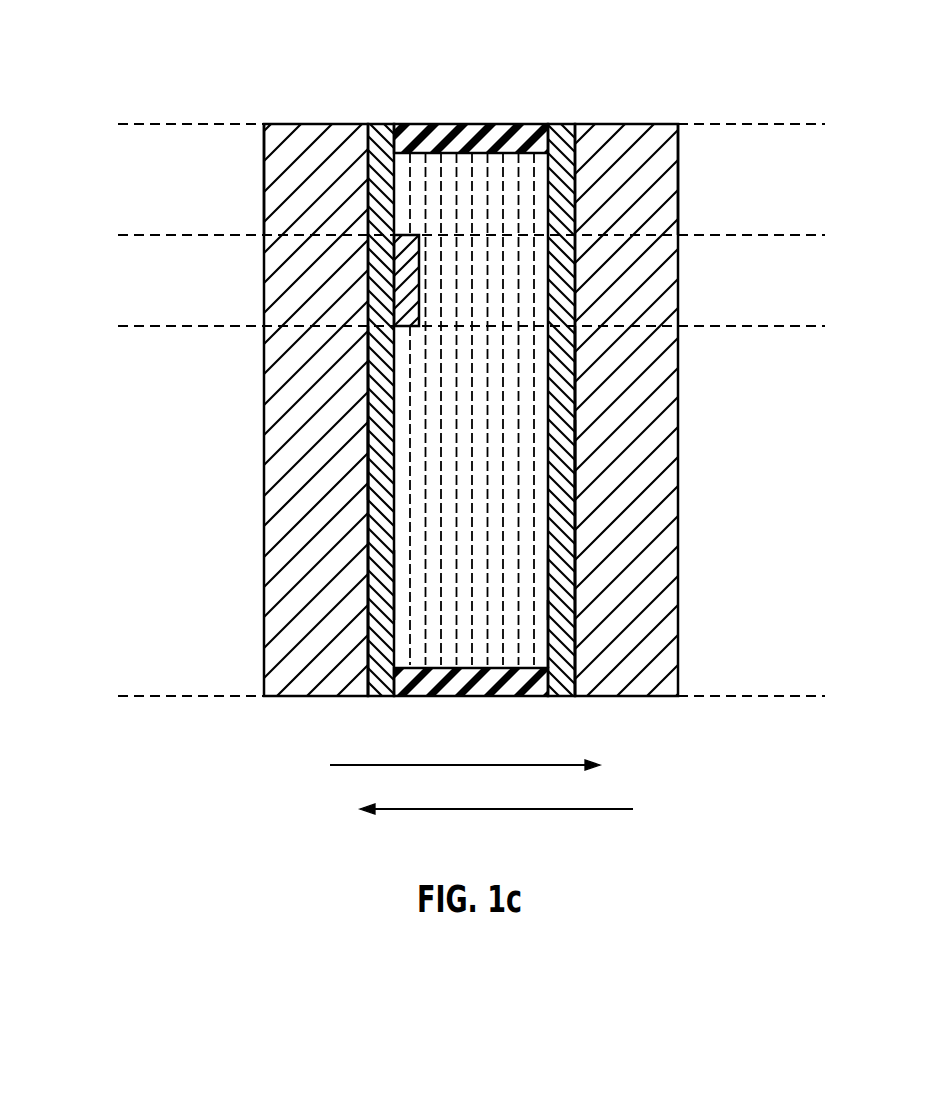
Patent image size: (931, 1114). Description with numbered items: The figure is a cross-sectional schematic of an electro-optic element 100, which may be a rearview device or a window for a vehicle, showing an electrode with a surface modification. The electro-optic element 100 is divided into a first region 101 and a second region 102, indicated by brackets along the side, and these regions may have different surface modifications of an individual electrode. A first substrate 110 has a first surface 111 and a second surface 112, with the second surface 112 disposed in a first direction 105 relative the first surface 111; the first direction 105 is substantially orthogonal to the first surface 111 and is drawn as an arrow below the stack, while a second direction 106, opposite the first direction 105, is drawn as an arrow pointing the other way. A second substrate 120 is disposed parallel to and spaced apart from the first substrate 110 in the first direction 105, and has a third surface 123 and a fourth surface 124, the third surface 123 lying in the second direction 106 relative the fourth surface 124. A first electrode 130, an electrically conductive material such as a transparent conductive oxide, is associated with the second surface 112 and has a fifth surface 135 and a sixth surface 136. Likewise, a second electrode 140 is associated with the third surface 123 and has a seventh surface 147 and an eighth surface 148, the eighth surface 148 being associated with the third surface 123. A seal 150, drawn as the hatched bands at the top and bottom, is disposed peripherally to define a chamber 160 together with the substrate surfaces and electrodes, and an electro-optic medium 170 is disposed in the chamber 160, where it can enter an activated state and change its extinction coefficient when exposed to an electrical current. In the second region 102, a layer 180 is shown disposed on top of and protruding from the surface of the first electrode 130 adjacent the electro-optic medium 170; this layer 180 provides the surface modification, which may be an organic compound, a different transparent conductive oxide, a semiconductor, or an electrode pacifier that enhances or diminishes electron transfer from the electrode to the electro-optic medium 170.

The electro-optic element 100 is at (177, 78).
The first region 101 is at (108, 696).
The second region 102 is at (108, 235).
The first direction 105 is at (483, 765).
The second direction 106 is at (477, 809).
The first substrate 110 is at (303, 188).
The first surface 111 is at (264, 172).
The second surface 112 is at (368, 393).
The second substrate 120 is at (647, 190).
The third surface 123 is at (575, 393).
The fourth surface 124 is at (678, 172).
The first electrode 130 is at (382, 528).
The fifth surface 135 is at (368, 452).
The sixth surface 136 is at (384, 584).
The second electrode 140 is at (565, 528).
The seventh surface 147 is at (552, 588).
The eighth surface 148 is at (575, 454).
The seal 150 is at (517, 683).
The chamber 160 is at (492, 422).
The electro-optic medium 170 is at (483, 625).
The layer 180 is at (408, 270).